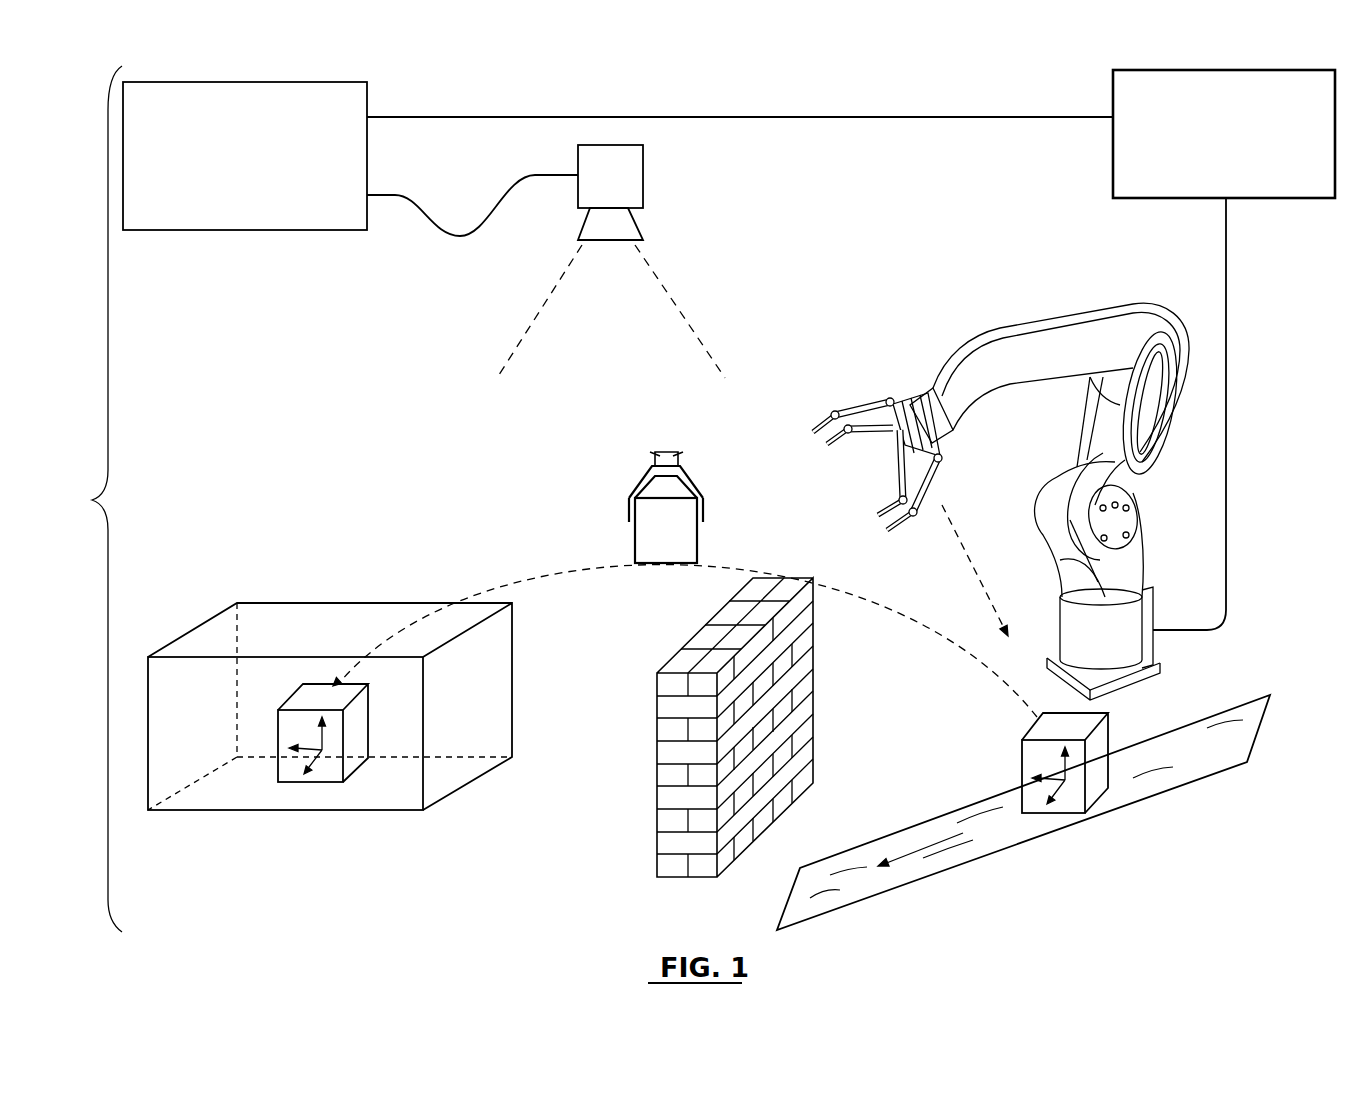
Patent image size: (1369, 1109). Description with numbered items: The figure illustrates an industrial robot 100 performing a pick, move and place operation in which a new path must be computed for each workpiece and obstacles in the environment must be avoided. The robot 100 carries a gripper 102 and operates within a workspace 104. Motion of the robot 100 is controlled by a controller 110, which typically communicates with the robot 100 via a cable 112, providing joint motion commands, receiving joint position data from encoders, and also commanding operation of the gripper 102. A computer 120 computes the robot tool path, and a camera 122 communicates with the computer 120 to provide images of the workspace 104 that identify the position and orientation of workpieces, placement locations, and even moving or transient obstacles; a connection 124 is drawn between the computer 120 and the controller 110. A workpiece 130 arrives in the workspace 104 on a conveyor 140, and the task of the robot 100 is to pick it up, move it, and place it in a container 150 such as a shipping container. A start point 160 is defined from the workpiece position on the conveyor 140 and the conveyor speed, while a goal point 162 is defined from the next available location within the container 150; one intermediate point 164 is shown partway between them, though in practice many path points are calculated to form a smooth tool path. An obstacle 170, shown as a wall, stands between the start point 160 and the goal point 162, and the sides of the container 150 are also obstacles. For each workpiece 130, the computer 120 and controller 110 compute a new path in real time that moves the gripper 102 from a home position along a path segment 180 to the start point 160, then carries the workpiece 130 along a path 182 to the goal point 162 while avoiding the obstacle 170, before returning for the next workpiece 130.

The robot 100 is at (1085, 262).
The gripper 102 is at (937, 483).
The workspace 104 is at (83, 499).
The controller 110 is at (1258, 200).
The cable 112 is at (1228, 524).
The computer 120 is at (243, 232).
The camera 122 is at (647, 177).
The computer to controller connection 124 is at (935, 117).
The workpiece 130 is at (1112, 724).
The conveyor 140 is at (1198, 778).
The container 150 is at (468, 783).
The start point 160 is at (1083, 776).
The goal point 162 is at (340, 750).
The intermediate point 164 is at (710, 534).
The obstacle 170 is at (657, 868).
The path segment 180 is at (977, 577).
The path 182 is at (548, 562).